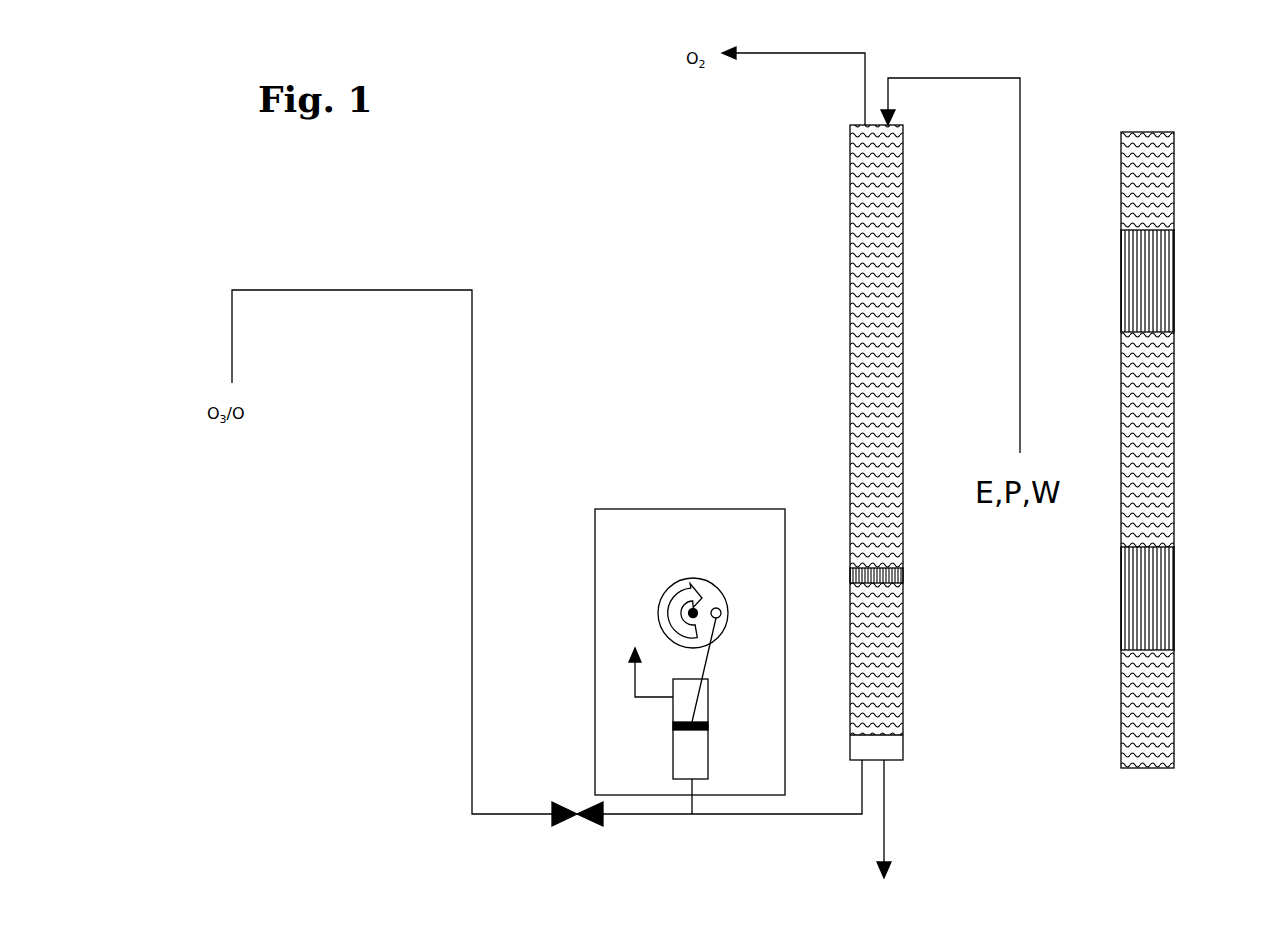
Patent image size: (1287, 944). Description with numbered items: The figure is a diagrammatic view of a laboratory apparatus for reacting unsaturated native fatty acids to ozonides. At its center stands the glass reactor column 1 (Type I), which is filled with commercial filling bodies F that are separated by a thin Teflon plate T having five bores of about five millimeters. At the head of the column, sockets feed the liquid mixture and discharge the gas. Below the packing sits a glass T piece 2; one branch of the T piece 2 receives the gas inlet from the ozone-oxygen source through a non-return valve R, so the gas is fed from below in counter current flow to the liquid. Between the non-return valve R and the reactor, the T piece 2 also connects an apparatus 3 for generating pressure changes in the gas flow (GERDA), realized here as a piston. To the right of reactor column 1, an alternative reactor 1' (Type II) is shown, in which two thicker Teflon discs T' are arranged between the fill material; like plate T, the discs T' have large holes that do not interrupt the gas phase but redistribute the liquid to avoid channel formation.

The reactor column 1 is at (892, 442).
The alternative reactor 1' is at (1176, 450).
The T piece 2 is at (703, 814).
The apparatus for generating pressure changes in the gas flow 3 is at (622, 509).
The non-return valve R is at (547, 828).
The Teflon plate T is at (912, 587).
The thicker Teflon discs T' is at (1175, 440).
The filling bodies F is at (903, 410).